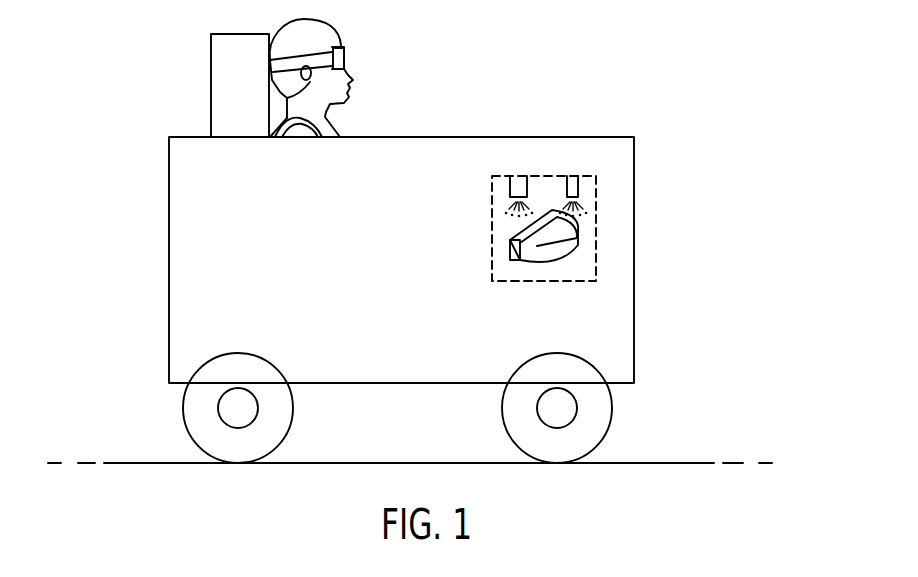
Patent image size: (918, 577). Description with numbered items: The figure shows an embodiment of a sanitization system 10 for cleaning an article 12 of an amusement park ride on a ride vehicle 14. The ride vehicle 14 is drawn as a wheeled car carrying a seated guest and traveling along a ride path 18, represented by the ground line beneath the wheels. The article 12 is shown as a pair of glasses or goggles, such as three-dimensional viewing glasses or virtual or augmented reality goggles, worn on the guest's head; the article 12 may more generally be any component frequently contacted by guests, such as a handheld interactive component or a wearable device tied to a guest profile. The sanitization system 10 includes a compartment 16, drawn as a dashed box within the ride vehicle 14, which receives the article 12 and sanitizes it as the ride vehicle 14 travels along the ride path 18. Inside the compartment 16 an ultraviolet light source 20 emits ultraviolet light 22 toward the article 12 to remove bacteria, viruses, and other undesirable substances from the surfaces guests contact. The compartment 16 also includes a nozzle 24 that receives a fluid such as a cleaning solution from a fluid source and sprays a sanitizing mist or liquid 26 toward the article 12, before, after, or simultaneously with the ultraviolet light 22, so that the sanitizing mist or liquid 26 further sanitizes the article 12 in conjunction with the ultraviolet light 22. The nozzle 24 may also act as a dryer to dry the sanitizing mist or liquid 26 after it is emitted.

The sanitization system 10 is at (563, 53).
The article 12 is at (345, 56).
The ride vehicle 14 is at (403, 137).
The compartment 16 is at (597, 228).
The ride path 18 is at (160, 463).
The ultraviolet light source 20 is at (510, 178).
The ultraviolet light 22 is at (507, 210).
The nozzle 24 is at (578, 180).
The sanitizing mist or liquid 26 is at (582, 210).